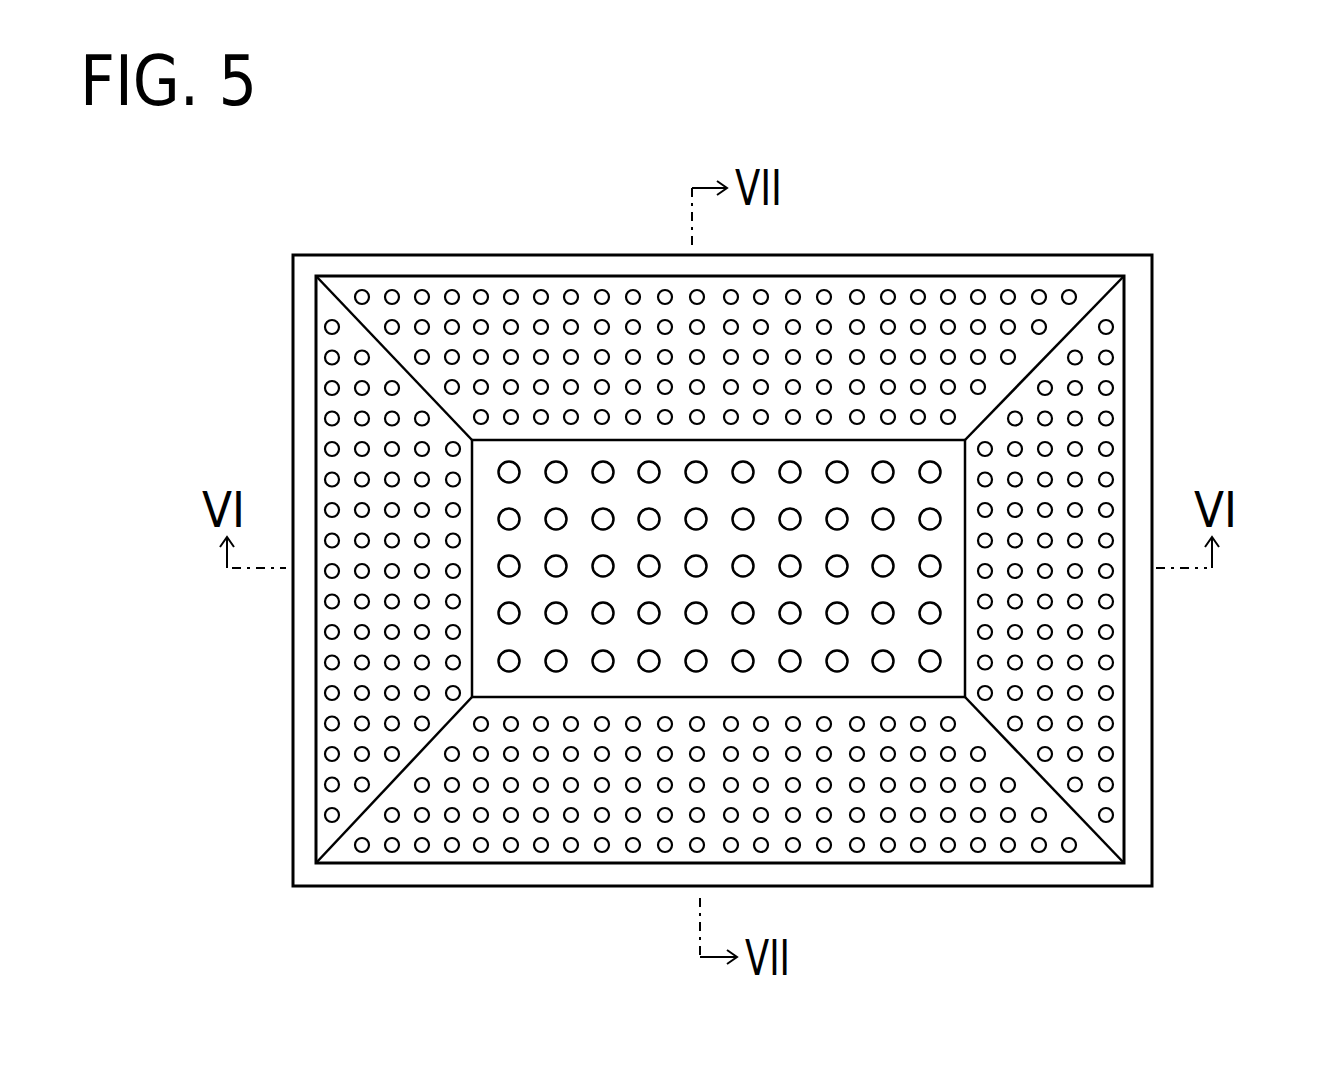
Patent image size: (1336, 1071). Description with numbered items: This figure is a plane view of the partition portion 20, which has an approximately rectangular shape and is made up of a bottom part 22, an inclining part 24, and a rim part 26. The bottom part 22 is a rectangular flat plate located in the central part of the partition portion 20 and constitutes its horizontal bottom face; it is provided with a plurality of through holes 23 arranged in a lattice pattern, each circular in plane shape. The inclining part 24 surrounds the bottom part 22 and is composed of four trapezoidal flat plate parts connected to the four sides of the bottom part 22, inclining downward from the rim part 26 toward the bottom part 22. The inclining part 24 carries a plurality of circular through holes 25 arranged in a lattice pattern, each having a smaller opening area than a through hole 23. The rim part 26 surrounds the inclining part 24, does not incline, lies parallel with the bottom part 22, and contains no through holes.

The partition portion 20 is at (722, 485).
The bottom part 22 is at (685, 427).
The through hole 23 is at (609, 324).
The inclining part 24 is at (819, 553).
The through hole 25 is at (1204, 401).
The rim part 26 is at (625, 569).